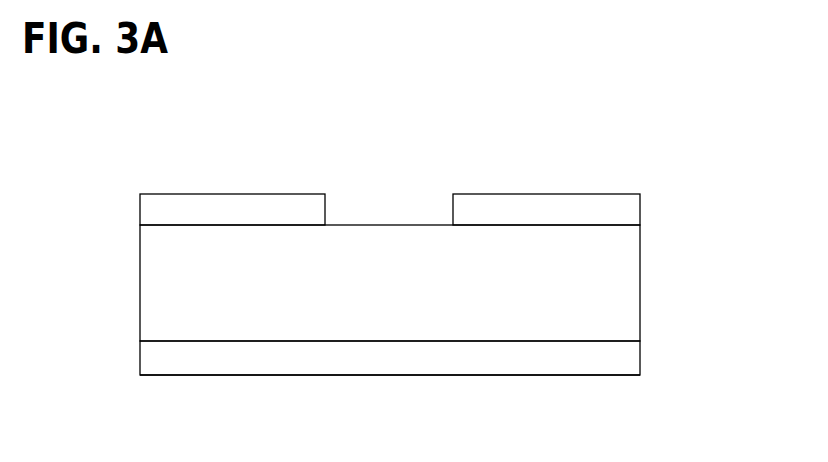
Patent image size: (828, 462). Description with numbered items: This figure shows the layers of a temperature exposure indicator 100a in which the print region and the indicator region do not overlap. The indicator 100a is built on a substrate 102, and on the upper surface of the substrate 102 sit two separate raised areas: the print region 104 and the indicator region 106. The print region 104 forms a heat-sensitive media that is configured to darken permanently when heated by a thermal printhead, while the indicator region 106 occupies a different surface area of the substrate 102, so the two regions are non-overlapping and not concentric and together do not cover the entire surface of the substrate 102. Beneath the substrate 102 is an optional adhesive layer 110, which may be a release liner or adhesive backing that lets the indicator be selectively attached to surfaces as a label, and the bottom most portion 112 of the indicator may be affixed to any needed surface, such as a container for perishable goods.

The indicator 100a is at (390, 234).
The substrate 102 is at (430, 283).
The print region 104 is at (187, 202).
The indicator region 106 is at (587, 201).
The adhesive layer 110 is at (430, 347).
The bottom most portion 112 is at (390, 404).